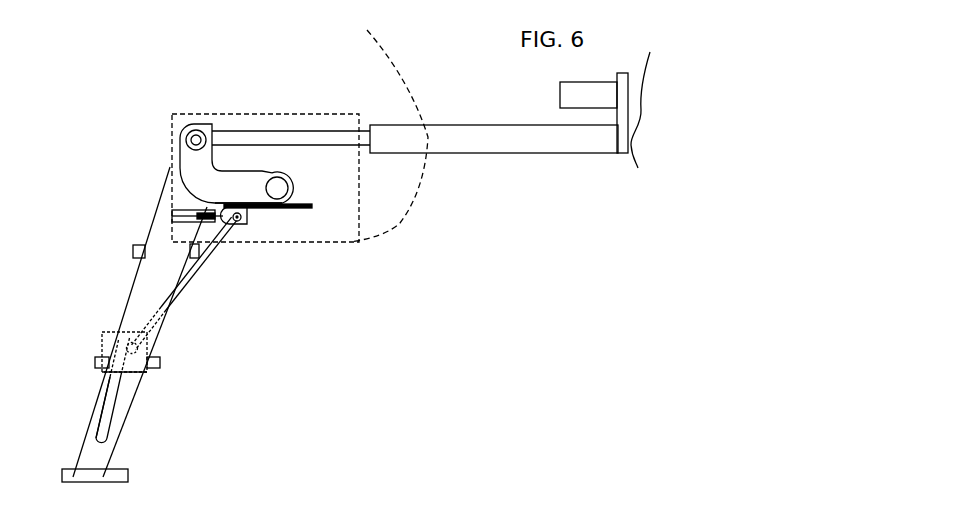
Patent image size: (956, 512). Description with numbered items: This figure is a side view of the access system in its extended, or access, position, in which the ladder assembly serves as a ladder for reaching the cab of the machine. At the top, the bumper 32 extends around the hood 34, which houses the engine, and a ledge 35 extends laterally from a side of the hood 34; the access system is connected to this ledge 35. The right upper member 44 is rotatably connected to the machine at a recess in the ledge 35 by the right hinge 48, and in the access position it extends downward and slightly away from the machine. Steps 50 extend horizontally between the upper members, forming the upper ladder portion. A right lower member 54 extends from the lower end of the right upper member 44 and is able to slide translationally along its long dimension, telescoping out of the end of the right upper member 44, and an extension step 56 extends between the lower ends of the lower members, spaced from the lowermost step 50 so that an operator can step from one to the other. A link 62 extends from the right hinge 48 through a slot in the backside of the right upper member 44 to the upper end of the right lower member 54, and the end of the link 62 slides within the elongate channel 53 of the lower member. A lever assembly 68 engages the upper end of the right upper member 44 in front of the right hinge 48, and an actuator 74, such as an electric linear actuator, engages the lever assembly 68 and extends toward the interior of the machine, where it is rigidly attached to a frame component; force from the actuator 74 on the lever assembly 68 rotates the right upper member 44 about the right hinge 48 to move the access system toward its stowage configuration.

The bumper 32 is at (176, 131).
The hood 34 is at (367, 63).
The ledge 35 is at (263, 113).
The right upper member 44 is at (140, 285).
The right hinge 48 is at (282, 189).
The steps 50 is at (137, 245).
The elongate channel 53 is at (110, 415).
The right lower member 54 is at (97, 410).
The extension step 56 is at (67, 468).
The link 62 is at (210, 252).
The lever assembly 68 is at (234, 196).
The actuator 74 is at (460, 143).